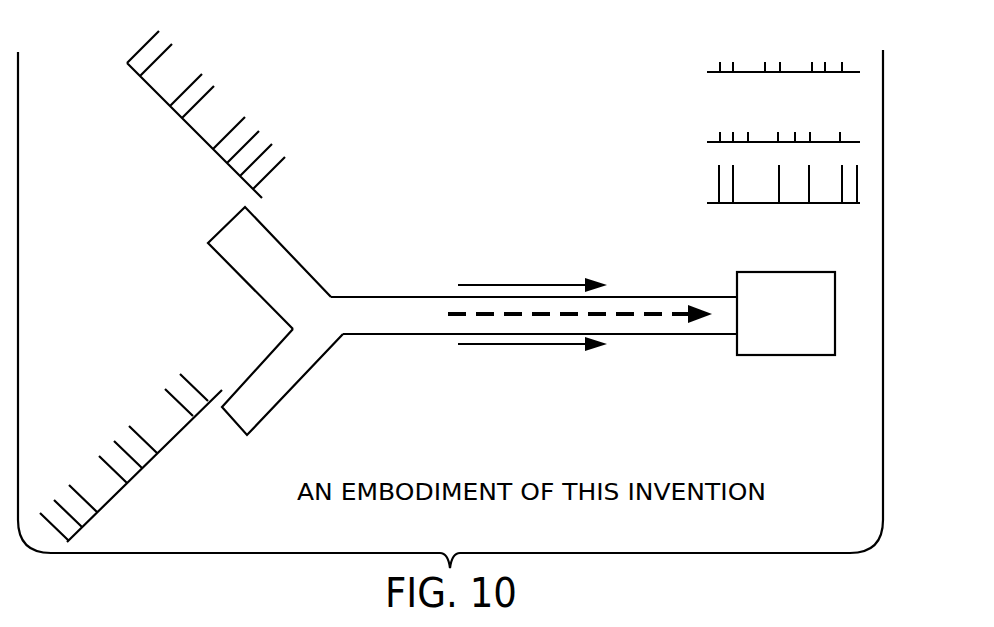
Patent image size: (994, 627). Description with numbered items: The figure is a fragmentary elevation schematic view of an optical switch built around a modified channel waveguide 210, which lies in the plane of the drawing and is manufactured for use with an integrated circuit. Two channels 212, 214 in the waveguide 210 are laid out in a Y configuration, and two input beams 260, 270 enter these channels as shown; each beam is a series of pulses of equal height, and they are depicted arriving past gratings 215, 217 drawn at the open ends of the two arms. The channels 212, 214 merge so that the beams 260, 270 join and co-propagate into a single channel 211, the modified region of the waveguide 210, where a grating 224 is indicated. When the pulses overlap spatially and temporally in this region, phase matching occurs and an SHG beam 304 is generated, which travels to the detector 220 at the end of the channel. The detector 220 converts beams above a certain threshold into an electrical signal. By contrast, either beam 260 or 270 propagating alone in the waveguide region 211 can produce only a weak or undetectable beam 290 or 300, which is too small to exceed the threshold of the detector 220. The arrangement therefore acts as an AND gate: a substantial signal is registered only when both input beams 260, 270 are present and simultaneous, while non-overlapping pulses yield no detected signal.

The channel waveguide 210 is at (460, 287).
The single channel 211 is at (534, 271).
The channel 212 is at (255, 272).
The channel 214 is at (270, 367).
The grating 215 is at (185, 121).
The grating 217 is at (127, 483).
The detector 220 is at (772, 356).
The grating that produces beam 304 224 is at (397, 307).
The beam 260 is at (231, 419).
The beam 270 is at (229, 225).
The beam 290 is at (555, 347).
The beam 300 is at (555, 283).
The SHG beam 304 is at (853, 205).